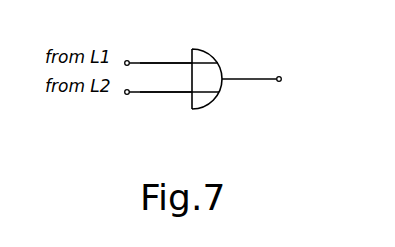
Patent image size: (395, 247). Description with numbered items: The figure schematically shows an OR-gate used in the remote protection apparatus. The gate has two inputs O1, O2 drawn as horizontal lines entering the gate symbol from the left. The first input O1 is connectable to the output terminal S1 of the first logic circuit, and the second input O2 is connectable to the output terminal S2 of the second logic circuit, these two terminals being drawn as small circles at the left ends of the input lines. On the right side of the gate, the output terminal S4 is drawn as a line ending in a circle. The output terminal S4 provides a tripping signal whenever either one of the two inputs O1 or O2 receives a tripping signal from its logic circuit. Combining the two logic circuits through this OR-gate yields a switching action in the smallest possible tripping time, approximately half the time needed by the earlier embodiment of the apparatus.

The output terminal of logic circuit L1 S1 is at (128, 60).
The output terminal of logic circuit L2 S2 is at (127, 94).
The output terminal of the OR-gate S4 is at (281, 78).
The first input of the OR-gate O1 is at (161, 63).
The second input of the OR-gate O2 is at (162, 93).